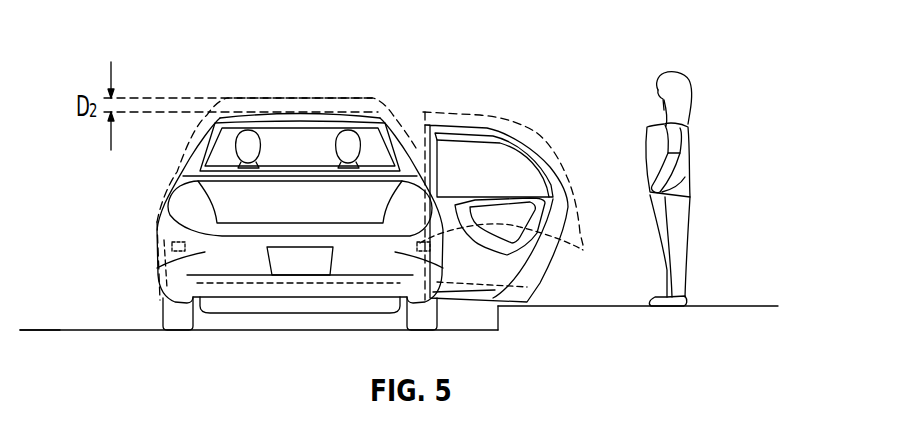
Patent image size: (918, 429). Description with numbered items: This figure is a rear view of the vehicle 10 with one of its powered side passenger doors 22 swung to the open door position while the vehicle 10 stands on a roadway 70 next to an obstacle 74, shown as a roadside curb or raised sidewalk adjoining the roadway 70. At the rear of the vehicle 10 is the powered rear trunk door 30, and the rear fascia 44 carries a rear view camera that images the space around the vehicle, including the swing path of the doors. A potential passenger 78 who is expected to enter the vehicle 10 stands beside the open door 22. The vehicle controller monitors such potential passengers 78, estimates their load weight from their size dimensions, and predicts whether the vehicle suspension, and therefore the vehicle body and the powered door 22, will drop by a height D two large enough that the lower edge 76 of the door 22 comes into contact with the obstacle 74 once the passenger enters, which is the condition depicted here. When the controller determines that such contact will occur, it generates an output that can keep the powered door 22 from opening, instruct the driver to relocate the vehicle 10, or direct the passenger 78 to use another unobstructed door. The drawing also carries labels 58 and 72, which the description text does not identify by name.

The vehicle 10 is at (422, 190).
The side passenger door 22 is at (483, 130).
The powered rear trunk door 30 is at (303, 205).
The rear fascia 44 is at (158, 267).
The sensor 58 is at (168, 243).
The roadway 70 is at (68, 329).
The road surface 72 is at (173, 320).
The obstacle 74 is at (497, 307).
The lower edge of door 76 is at (522, 306).
The potential passenger 78 is at (692, 105).